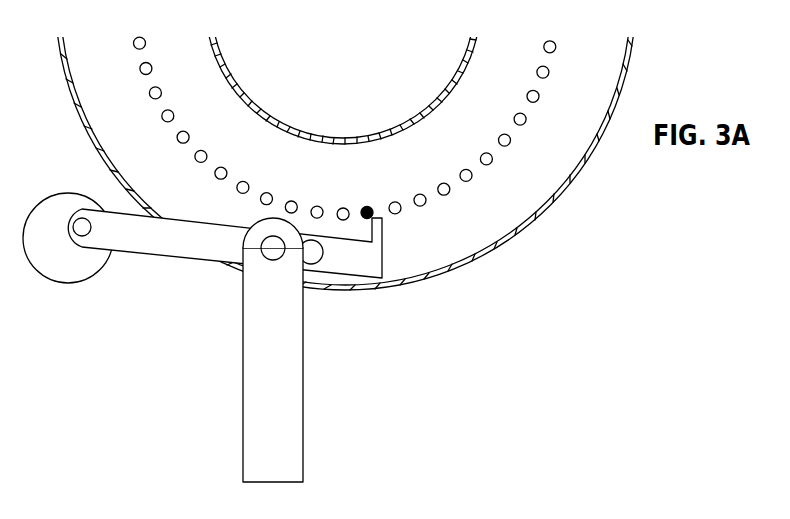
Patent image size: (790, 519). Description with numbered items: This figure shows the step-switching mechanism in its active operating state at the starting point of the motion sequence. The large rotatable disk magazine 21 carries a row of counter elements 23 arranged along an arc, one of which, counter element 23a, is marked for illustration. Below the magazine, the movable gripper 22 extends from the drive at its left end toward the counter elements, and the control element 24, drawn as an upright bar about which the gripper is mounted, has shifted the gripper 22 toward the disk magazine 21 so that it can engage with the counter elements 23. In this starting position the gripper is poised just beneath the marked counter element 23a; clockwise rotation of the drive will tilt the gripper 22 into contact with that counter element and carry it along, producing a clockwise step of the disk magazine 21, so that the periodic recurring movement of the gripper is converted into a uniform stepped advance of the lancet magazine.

The disk magazine 21 is at (571, 155).
The gripper 22 is at (145, 238).
The counter elements 23 is at (402, 223).
The counter element 23a is at (373, 216).
The control element 24 is at (258, 467).